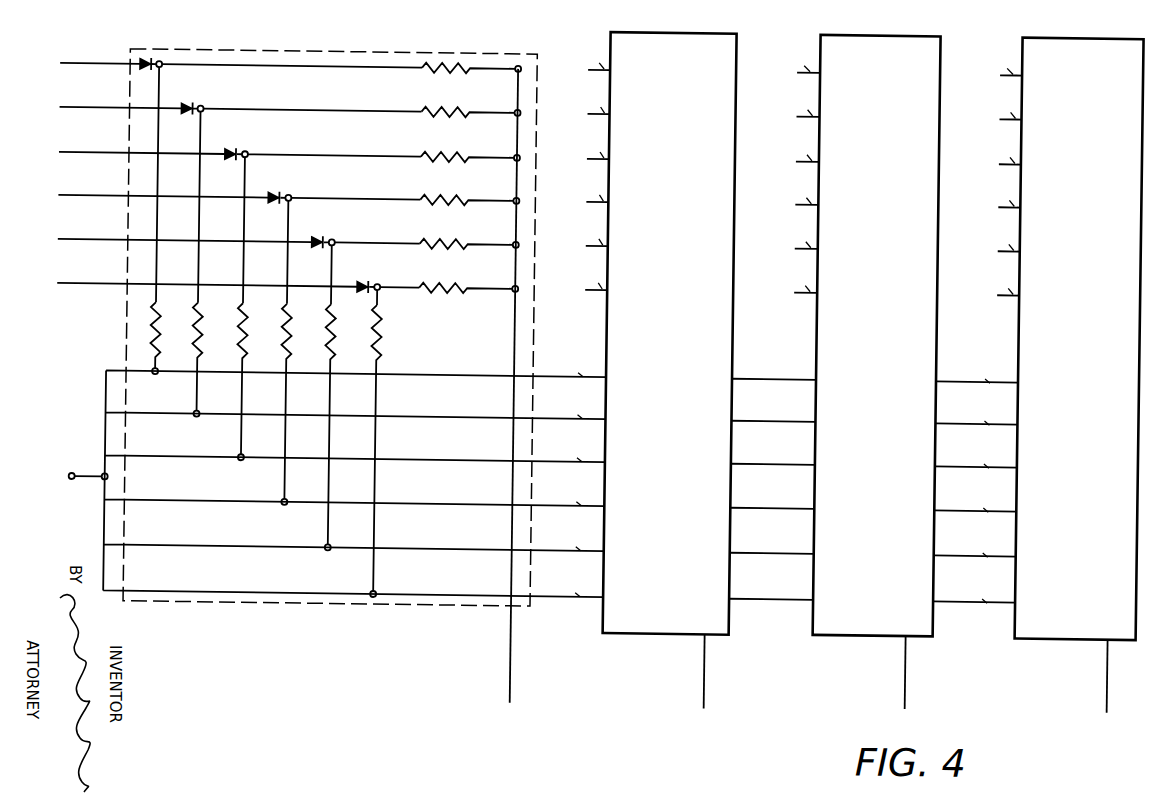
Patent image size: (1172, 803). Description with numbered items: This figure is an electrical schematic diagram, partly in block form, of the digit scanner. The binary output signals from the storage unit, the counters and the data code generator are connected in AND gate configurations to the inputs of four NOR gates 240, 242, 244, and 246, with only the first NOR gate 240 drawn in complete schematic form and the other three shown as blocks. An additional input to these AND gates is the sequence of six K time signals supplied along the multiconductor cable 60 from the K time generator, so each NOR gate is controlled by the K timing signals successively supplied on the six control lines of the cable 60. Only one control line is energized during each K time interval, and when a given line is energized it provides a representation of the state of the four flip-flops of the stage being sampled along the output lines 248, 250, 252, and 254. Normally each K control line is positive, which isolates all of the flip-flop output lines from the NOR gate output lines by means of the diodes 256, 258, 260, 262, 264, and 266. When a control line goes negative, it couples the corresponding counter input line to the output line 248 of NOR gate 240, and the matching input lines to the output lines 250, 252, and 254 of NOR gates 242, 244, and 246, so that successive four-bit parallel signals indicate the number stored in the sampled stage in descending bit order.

The NOR gate 240 is at (292, 55).
The NOR gate 242 is at (641, 31).
The NOR gate 244 is at (844, 33).
The NOR gate 246 is at (1113, 31).
The output line 248 is at (516, 686).
The output line 250 is at (710, 691).
The output line 252 is at (911, 693).
The output line 254 is at (1113, 702).
The diode 256 is at (148, 76).
The diode 258 is at (190, 120).
The diode 260 is at (234, 165).
The diode 262 is at (278, 208).
The diode 264 is at (325, 247).
The diode 266 is at (368, 289).
The multiconductor cable 60 is at (77, 487).